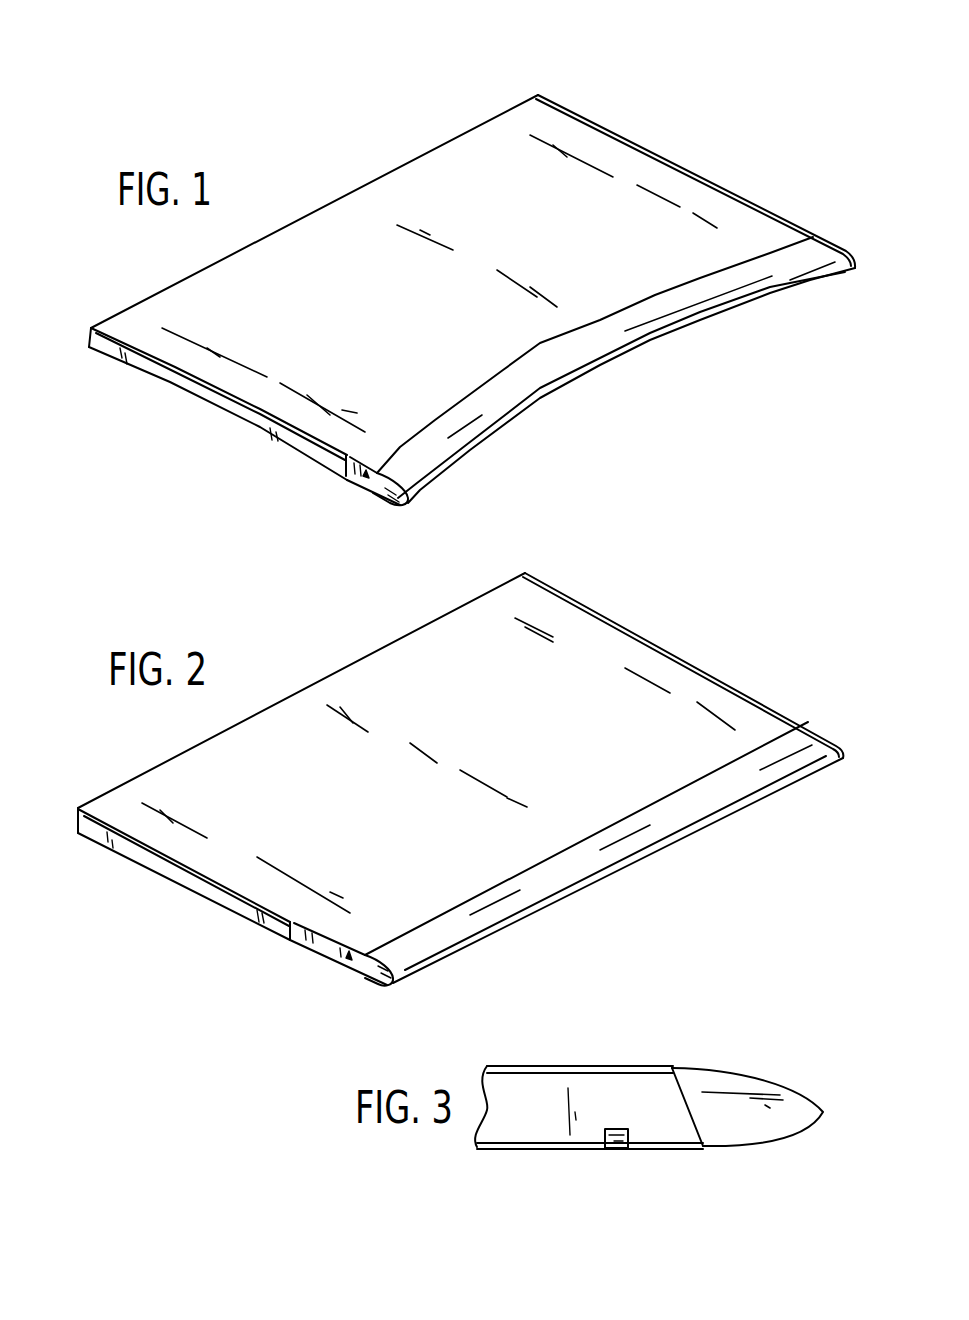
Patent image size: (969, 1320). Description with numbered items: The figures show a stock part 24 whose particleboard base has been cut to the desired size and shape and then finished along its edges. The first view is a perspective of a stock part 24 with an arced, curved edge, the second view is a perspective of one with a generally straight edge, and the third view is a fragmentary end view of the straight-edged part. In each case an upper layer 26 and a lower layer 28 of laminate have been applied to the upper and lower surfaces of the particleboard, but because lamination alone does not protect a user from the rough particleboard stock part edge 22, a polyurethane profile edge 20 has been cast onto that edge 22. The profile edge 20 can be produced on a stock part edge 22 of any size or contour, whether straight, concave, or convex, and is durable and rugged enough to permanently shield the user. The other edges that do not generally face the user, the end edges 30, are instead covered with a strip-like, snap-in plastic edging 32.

In FIG. 1, the profile edge 20 is at (825, 262).
In FIG. 2, the profile edge 20 is at (807, 745).
In FIG. 3, the profile edge 20 is at (772, 1095).
In FIG. 1, the stock part edge 22 is at (372, 493).
In FIG. 2, the stock part edge 22 is at (360, 975).
In FIG. 3, the stock part edge 22 is at (687, 1117).
In FIG. 1, the stock part 24 is at (352, 478).
In FIG. 2, the stock part 24 is at (317, 948).
In FIG. 3, the stock part 24 is at (592, 1141).
In FIG. 1, the upper layer 26 is at (473, 163).
In FIG. 2, the upper layer 26 is at (603, 642).
In FIG. 3, the upper layer 26 is at (603, 1063).
In FIG. 1, the lower layer 28 is at (227, 422).
In FIG. 2, the lower layer 28 is at (210, 900).
In FIG. 3, the lower layer 28 is at (522, 1149).
In FIG. 1, the end edges 30 is at (363, 480).
In FIG. 2, the end edges 30 is at (337, 950).
In FIG. 3, the end edges 30 is at (647, 1130).
In FIG. 1, the snap-in plastic edging 32 is at (670, 163).
In FIG. 2, the snap-in plastic edging 32 is at (673, 652).